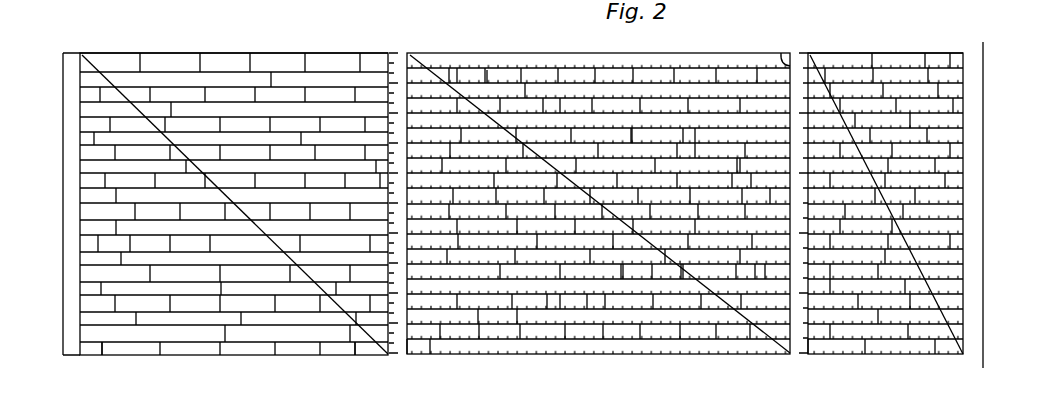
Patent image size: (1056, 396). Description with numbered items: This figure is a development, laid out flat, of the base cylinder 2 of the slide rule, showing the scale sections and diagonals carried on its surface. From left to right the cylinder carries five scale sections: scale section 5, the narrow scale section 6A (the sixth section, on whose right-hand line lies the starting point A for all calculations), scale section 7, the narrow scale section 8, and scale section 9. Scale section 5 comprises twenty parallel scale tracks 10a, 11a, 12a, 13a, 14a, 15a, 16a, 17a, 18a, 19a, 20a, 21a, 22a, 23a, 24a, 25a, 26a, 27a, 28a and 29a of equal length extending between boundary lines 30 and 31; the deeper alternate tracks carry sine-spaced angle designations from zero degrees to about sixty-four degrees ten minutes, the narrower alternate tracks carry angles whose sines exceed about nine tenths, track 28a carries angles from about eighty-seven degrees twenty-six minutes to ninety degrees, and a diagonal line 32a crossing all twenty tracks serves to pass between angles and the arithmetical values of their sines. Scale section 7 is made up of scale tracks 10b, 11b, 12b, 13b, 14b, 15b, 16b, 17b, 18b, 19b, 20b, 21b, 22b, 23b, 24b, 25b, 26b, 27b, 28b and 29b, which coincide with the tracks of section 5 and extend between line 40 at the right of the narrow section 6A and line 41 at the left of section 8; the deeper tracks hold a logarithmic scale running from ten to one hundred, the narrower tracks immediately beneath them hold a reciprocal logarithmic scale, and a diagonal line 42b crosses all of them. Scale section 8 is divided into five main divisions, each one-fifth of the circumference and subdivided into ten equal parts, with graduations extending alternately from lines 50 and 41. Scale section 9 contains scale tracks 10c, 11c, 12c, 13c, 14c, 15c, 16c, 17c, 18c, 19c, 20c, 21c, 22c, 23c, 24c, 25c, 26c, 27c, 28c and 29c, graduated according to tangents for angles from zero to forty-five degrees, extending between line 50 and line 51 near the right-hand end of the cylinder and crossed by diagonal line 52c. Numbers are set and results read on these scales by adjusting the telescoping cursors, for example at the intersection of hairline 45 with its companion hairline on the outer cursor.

The base cylinder 2 is at (984, 195).
The scale section 5 is at (250, 22).
The scale section 7 is at (589, 24).
The scale section 9 is at (905, 22).
The scale section with starting point A 6A is at (398, 48).
The scale section 8 is at (804, 45).
The scale track 10a is at (86, 60).
The scale track 11a is at (80, 71).
The scale track 12a is at (80, 87).
The scale track 13a is at (80, 102).
The scale track 14a is at (80, 118).
The scale track 15a is at (80, 134).
The scale track 16a is at (80, 150).
The scale track 17a is at (80, 166).
The scale track 18a is at (80, 181).
The scale track 19a is at (80, 197).
The scale track 20a is at (80, 213).
The scale track 21a is at (80, 229).
The scale track 22a is at (80, 245).
The scale track 23a is at (80, 260).
The scale track 24a is at (80, 276).
The scale track 25a is at (80, 292).
The scale track 26a is at (80, 308).
The scale track 27a is at (80, 324).
The scale track 28a is at (80, 339).
The scale track 29a is at (80, 355).
The scale track 10c is at (964, 55).
The scale track 11c is at (964, 71).
The scale track 12c is at (964, 87).
The scale track 13c is at (964, 102).
The scale track 14c is at (964, 118).
The scale track 15c is at (964, 134).
The scale track 16c is at (964, 150).
The scale track 17c is at (964, 166).
The scale track 18c is at (964, 181).
The scale track 19c is at (964, 197).
The scale track 20c is at (964, 213).
The scale track 21c is at (964, 229).
The scale track 22c is at (964, 245).
The scale track 23c is at (964, 260).
The scale track 24c is at (964, 276).
The scale track 25c is at (964, 292).
The scale track 26c is at (964, 308).
The scale track 27c is at (964, 324).
The scale track 28c is at (964, 339).
The scale track 29c is at (964, 355).
The scale track 10b is at (457, 68).
The scale track 11b is at (488, 78).
The scale track 12b is at (524, 92).
The scale track 13b is at (560, 110).
The scale track 14b is at (636, 145).
The scale track 15b is at (683, 137).
The scale track 16b is at (694, 147).
The scale track 17b is at (740, 163).
The scale track 18b is at (750, 178).
The scale track 19b is at (770, 205).
The scale track 20b is at (764, 265).
The scale track 21b is at (757, 268).
The scale track 22b is at (682, 268).
The scale track 23b is at (654, 265).
The scale track 24b is at (624, 268).
The scale track 25b is at (587, 303).
The scale track 26b is at (547, 300).
The scale track 27b is at (517, 317).
The scale track 28b is at (478, 320).
The scale track 29b is at (431, 347).
The boundary line 30 is at (86, 350).
The boundary line 31 is at (374, 355).
The diagonal line 32a is at (92, 56).
The diagonal line 42b is at (412, 57).
The diagonal line 52c is at (818, 58).
The line 40 is at (410, 347).
The line 41 is at (781, 56).
The line 50 is at (822, 354).
The line 51 is at (963, 58).
The hairline 45 is at (944, 346).